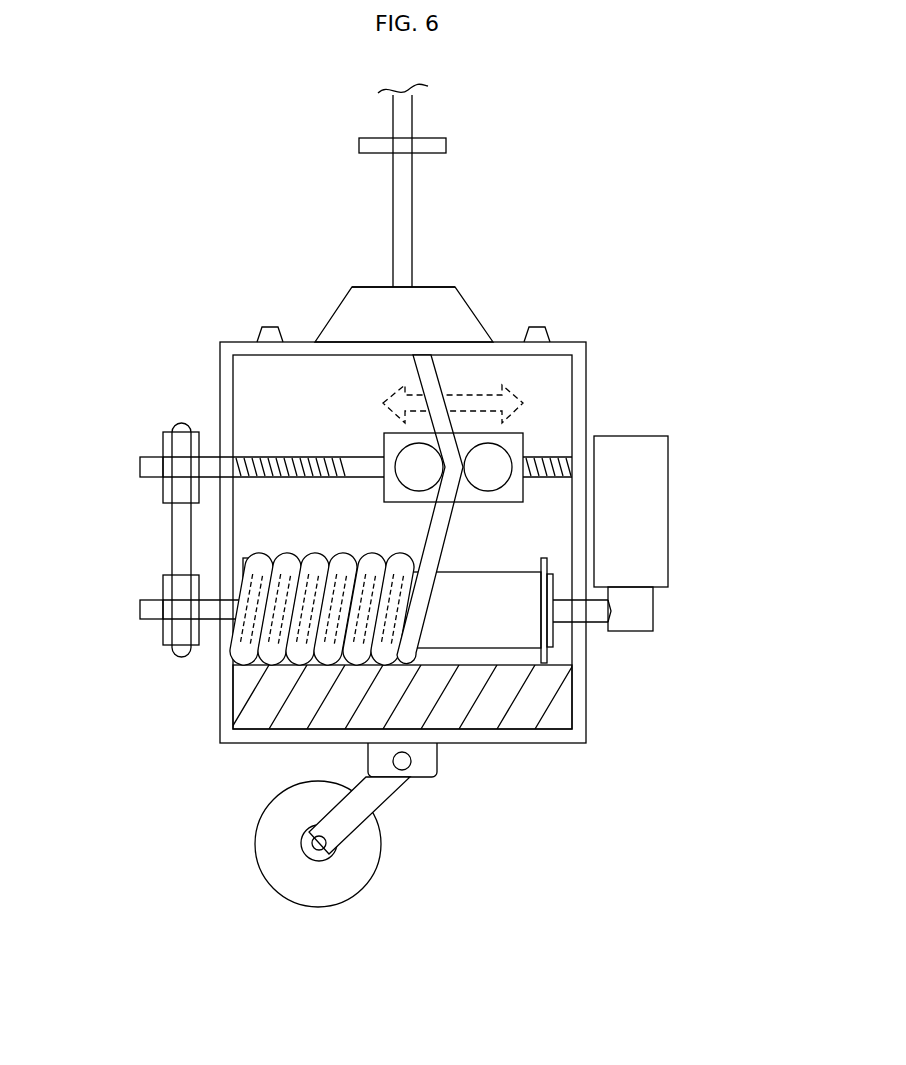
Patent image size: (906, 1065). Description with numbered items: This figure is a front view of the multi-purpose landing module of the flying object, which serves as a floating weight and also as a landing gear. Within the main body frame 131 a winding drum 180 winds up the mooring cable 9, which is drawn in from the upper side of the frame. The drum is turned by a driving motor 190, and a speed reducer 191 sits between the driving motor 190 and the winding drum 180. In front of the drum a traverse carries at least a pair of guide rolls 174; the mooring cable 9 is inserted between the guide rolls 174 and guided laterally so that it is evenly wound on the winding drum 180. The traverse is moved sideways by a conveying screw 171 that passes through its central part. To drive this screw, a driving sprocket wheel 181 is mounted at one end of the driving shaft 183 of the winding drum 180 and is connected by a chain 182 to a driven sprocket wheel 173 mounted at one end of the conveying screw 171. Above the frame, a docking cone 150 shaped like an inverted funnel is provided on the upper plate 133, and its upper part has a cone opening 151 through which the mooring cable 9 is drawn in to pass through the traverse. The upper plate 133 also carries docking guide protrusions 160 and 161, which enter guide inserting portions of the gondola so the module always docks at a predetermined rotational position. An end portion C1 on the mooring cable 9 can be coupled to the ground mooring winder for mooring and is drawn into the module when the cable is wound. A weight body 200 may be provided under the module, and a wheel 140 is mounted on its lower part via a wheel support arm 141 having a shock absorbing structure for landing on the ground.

The mooring cable 9 is at (412, 200).
The end portion C1 is at (446, 146).
The docking cone 150 is at (360, 308).
The cone opening 151 is at (425, 290).
The docking guide protrusion 160 is at (543, 322).
The docking guide protrusion 161 is at (263, 322).
The main body frame 131 is at (217, 370).
The upper plate 133 is at (240, 347).
The conveying screw 171 is at (265, 452).
The driven sprocket wheel 173 is at (157, 482).
The guide rolls 174 is at (488, 467).
The winding drum 180 is at (523, 628).
The driving sprocket wheel 181 is at (157, 617).
The chain 182 is at (163, 532).
The driving shaft 183 is at (598, 610).
The driving motor 190 is at (648, 513).
The speed reducer 191 is at (640, 613).
The weight body 200 is at (533, 742).
The wheel 140 is at (292, 878).
The wheel support arm 141 is at (367, 799).